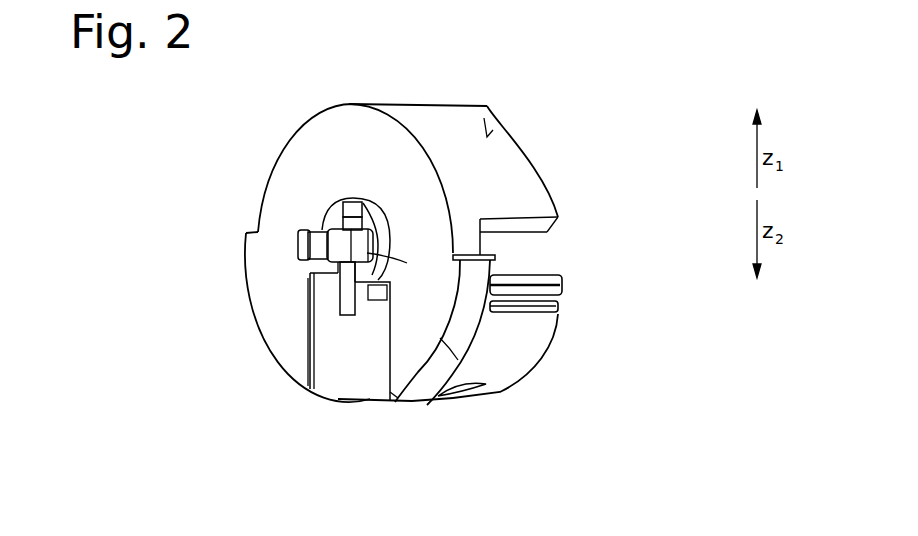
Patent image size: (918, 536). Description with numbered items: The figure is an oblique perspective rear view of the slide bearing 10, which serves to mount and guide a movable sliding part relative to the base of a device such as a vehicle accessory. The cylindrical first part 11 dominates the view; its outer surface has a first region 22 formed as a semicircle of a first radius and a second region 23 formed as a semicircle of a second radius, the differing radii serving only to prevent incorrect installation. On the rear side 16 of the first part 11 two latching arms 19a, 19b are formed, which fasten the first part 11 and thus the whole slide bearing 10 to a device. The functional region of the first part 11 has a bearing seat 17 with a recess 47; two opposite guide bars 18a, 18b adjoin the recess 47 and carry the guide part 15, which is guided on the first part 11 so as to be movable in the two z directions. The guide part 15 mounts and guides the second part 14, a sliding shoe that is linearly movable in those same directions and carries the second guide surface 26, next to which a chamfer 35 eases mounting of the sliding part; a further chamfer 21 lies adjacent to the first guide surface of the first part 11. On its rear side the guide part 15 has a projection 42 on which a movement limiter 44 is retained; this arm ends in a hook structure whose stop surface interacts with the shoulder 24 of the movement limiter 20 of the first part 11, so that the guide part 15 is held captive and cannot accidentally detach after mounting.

The slide bearing 10 is at (641, 101).
The first part 11 is at (290, 170).
The second part 14 is at (527, 224).
The guide part 15 is at (513, 353).
The rear side 16 is at (278, 205).
The bearing seat 17 is at (310, 385).
The guide bar 18a is at (398, 394).
The guide bar 18b is at (300, 342).
The latching arm 19a is at (288, 246).
The latching arm 19b is at (332, 292).
The movement limiter 20 is at (366, 187).
The chamfer 21 is at (541, 236).
The first region 22 is at (487, 107).
The second region 23 is at (432, 405).
The shoulder 24 is at (349, 188).
The second guide surface 26 is at (562, 286).
The chamfer 35 is at (504, 258).
The projection 42 is at (371, 378).
The movement limiter 44 is at (335, 290).
The recess 47 is at (440, 338).